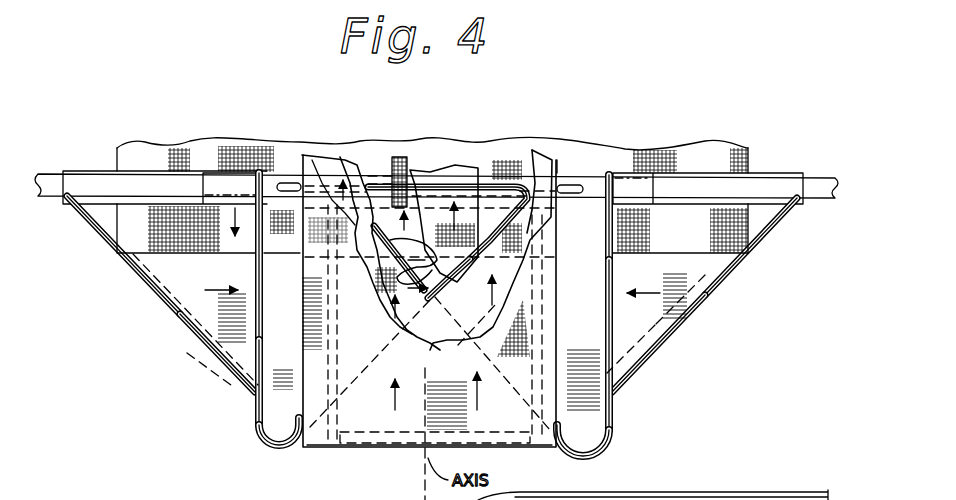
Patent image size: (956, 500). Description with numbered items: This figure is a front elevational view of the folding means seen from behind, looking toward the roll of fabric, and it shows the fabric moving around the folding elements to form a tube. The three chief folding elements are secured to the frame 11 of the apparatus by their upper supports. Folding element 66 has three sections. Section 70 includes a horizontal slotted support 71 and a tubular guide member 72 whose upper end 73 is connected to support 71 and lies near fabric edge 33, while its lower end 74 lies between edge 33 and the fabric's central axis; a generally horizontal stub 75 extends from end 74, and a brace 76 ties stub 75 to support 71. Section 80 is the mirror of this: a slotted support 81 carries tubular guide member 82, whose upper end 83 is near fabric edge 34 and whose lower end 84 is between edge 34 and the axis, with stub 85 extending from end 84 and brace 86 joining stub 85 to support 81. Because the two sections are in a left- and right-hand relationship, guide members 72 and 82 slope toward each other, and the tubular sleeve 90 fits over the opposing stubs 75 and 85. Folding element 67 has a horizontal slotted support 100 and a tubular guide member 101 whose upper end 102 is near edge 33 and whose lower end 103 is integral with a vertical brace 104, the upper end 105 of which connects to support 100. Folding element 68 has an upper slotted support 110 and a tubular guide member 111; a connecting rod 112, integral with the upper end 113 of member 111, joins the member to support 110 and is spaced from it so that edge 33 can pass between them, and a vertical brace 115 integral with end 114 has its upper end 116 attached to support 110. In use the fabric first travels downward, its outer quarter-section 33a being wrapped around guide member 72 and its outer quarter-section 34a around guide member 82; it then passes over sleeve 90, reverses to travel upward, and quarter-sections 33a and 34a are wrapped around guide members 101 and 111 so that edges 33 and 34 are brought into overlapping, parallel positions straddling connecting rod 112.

The frame 11 is at (777, 190).
The fabric edge 33 is at (400, 185).
The outer quarter-section 33a is at (643, 313).
The fabric edge 34 is at (133, 152).
The outer quarter-section 34a is at (220, 310).
The folding element 66 is at (331, 449).
The folding element 67 is at (613, 345).
The folding element 68 is at (252, 373).
The section 70 is at (702, 303).
The horizontal slotted support 71 is at (738, 148).
The tubular guide member 72 is at (752, 252).
The upper end 73 is at (762, 232).
The lower end 74 is at (563, 443).
The horizontal stub 75 is at (505, 428).
The brace 76 is at (548, 340).
The section 80 is at (188, 329).
The horizontal slotted support 81 is at (195, 166).
The tubular guide member 82 is at (210, 357).
The upper end 83 is at (100, 228).
The lower end 84 is at (293, 450).
The horizontal stub 85 is at (369, 424).
The brace 86 is at (340, 334).
The tubular sleeve 90 is at (395, 437).
The horizontal slotted support 100 is at (594, 187).
The tubular guide member 101 is at (467, 311).
The upper end 102 is at (351, 156).
The lower end 103 is at (613, 428).
The vertical brace 104 is at (607, 253).
The upper end 105 is at (613, 200).
The upper slotted support 110 is at (248, 173).
The tubular guide member 111 is at (432, 318).
The connecting rod 112 is at (410, 180).
The upper end 113 is at (521, 200).
The end 114 is at (257, 436).
The vertical brace 115 is at (259, 337).
The upper end 116 is at (274, 174).